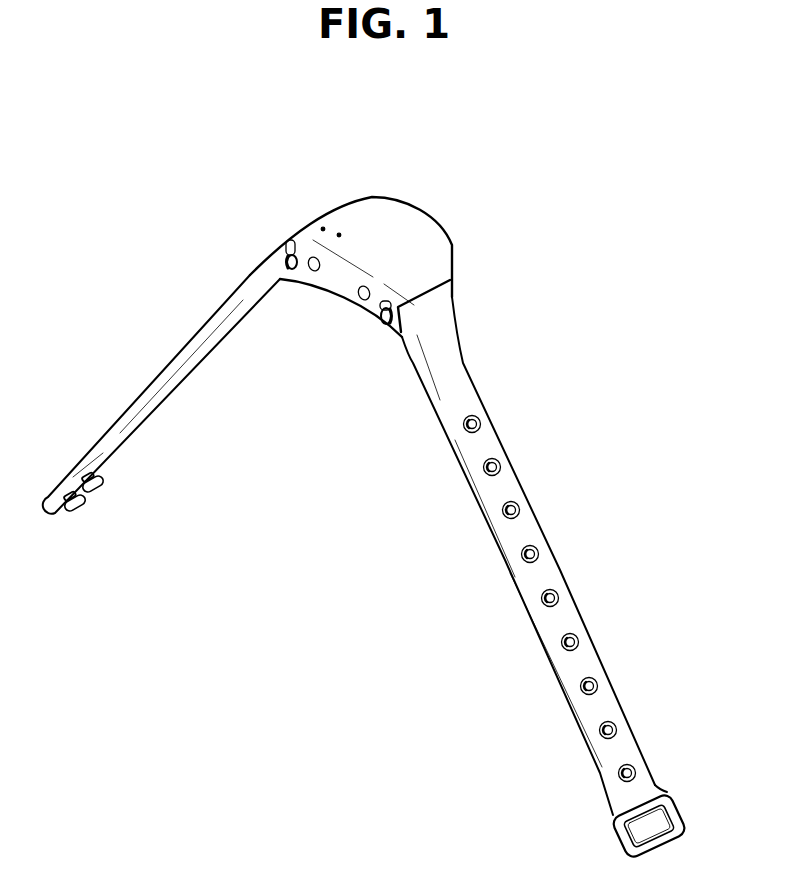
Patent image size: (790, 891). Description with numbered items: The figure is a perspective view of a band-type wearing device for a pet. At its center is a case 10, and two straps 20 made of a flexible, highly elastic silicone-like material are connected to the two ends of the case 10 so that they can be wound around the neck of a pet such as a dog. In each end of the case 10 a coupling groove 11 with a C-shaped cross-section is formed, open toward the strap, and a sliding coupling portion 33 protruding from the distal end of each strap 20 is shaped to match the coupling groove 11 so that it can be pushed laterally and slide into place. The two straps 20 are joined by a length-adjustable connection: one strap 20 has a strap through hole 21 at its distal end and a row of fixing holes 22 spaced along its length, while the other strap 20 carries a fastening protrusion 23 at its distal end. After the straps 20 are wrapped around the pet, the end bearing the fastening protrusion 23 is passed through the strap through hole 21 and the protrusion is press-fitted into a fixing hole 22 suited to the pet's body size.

The case 10 is at (407, 223).
The coupling groove 11 is at (292, 241).
The strap 20 is at (183, 358).
The strap through hole 21 is at (670, 817).
The fixing holes 22 is at (565, 597).
The fastening protrusion 23 is at (78, 509).
The sliding coupling portion 33 is at (291, 269).